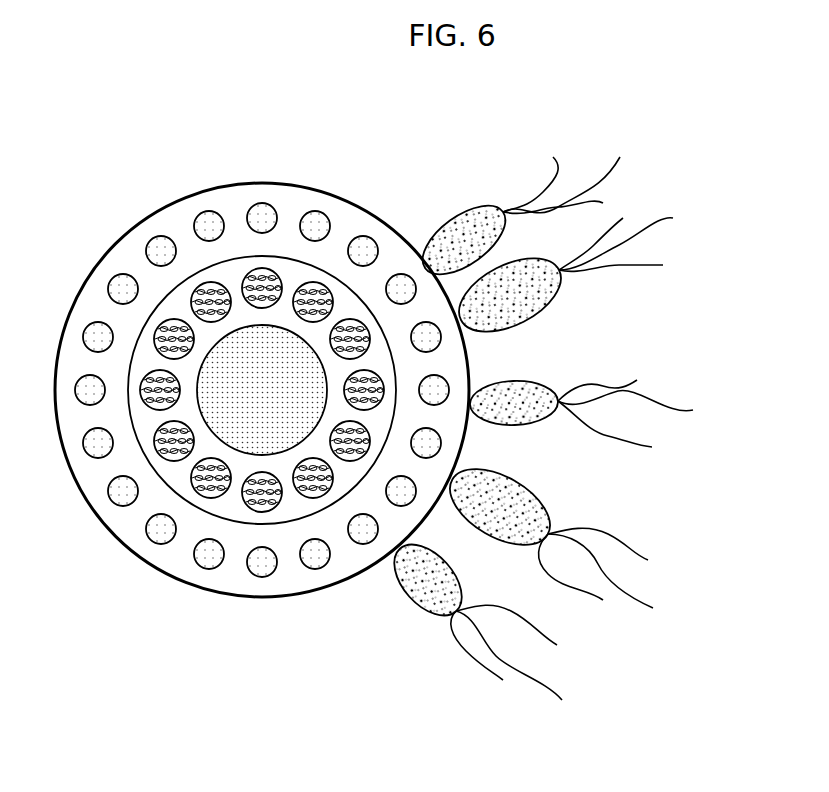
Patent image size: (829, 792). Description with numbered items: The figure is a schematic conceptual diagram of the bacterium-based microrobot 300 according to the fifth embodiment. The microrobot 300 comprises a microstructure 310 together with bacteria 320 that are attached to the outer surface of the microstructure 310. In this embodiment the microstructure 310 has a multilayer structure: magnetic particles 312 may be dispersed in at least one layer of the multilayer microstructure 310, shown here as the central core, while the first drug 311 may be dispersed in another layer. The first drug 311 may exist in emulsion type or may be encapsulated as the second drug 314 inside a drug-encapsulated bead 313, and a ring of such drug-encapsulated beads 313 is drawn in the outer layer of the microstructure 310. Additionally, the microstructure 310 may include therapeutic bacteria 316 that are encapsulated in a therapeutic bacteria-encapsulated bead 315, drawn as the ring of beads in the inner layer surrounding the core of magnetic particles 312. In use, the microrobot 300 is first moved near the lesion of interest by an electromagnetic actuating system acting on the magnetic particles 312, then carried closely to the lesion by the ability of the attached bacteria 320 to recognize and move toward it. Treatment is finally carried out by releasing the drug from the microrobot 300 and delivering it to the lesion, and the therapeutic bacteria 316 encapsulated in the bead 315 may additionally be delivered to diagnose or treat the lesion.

The bacterium-based microrobot 300 is at (150, 167).
The microstructure 310 is at (103, 254).
The first drug 311 is at (290, 267).
The magnetic particles 312 is at (298, 358).
The drug-encapsulated bead 313 is at (260, 578).
The second drug 314 is at (313, 557).
The therapeutic bacteria-encapsulated bead 315 is at (203, 497).
The therapeutic bacteria 316 is at (158, 453).
The bacteria 320 is at (545, 305).